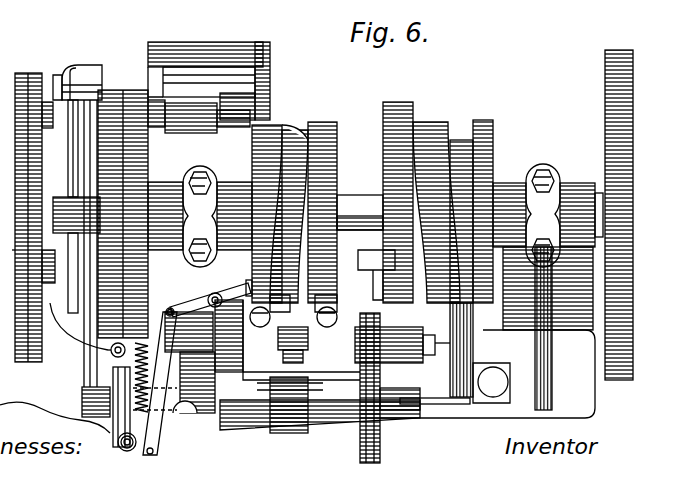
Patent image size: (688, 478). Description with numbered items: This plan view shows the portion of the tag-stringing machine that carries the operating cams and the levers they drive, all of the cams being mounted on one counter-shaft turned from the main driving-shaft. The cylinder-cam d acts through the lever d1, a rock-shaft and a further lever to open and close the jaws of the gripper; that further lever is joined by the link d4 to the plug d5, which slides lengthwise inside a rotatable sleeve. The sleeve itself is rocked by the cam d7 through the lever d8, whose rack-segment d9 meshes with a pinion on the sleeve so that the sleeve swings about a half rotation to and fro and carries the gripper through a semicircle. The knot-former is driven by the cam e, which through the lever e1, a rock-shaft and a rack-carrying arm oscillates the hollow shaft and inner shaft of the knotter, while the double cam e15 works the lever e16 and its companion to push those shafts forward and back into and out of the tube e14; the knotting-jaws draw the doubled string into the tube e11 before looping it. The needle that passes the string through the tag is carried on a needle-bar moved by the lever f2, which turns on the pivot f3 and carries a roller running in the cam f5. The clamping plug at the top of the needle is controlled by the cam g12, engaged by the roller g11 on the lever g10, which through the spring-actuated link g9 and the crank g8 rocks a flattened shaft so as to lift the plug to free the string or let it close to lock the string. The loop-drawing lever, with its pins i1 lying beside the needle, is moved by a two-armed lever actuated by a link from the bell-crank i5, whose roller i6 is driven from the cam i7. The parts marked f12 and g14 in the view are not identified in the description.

The double cam e15 is at (28, 205).
The lever e16 is at (9, 248).
The tube e11 is at (43, 145).
The pivot f3 is at (70, 70).
The lever f2 is at (58, 233).
The cam f5 is at (108, 96).
The cam i7 is at (147, 99).
The bell-crank i5 is at (209, 81).
The roller i6 is at (207, 118).
The cam g12 is at (252, 172).
The cam e is at (322, 202).
The block f12 is at (347, 220).
The cam d7 is at (398, 192).
The cylinder-cam d is at (483, 201).
The lever d1 is at (470, 325).
The pins i1 is at (627, 215).
The lever e1 is at (308, 328).
The lever d8 is at (370, 327).
The rack-segment d9 is at (368, 455).
The plug d5 is at (406, 410).
The link d4 is at (425, 404).
The lever g10 is at (188, 300).
The roller g11 is at (216, 293).
The spring-actuated link g9 is at (170, 358).
The crank g8 is at (131, 450).
The arc g14 is at (110, 350).
The tube e14 is at (168, 412).